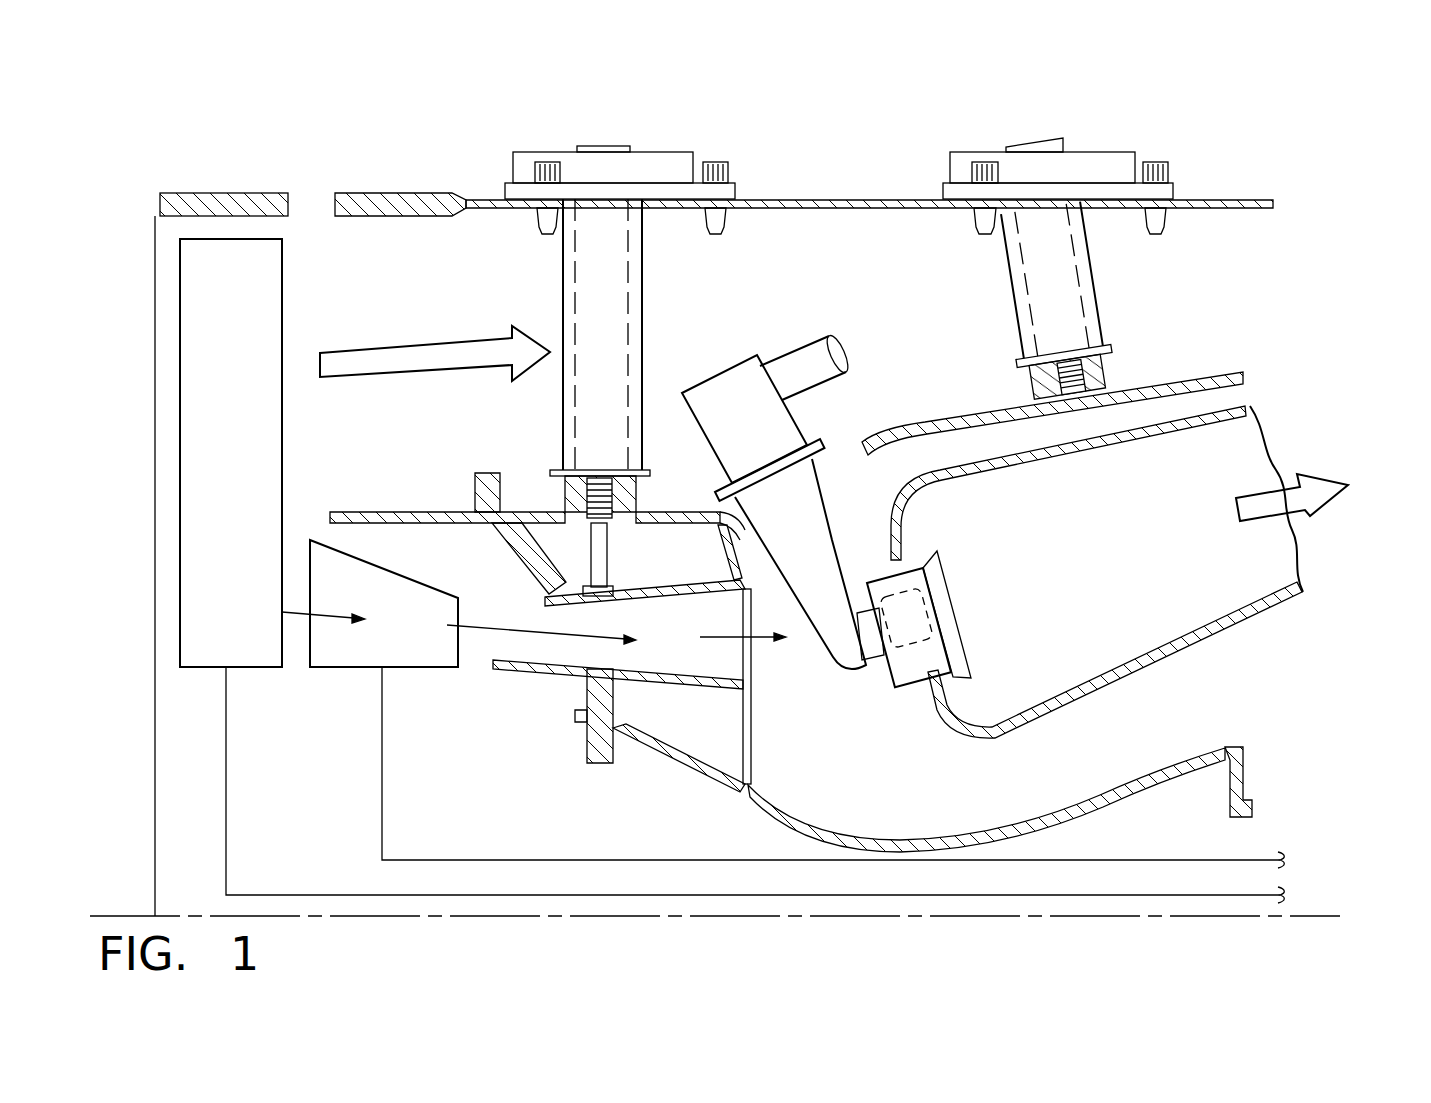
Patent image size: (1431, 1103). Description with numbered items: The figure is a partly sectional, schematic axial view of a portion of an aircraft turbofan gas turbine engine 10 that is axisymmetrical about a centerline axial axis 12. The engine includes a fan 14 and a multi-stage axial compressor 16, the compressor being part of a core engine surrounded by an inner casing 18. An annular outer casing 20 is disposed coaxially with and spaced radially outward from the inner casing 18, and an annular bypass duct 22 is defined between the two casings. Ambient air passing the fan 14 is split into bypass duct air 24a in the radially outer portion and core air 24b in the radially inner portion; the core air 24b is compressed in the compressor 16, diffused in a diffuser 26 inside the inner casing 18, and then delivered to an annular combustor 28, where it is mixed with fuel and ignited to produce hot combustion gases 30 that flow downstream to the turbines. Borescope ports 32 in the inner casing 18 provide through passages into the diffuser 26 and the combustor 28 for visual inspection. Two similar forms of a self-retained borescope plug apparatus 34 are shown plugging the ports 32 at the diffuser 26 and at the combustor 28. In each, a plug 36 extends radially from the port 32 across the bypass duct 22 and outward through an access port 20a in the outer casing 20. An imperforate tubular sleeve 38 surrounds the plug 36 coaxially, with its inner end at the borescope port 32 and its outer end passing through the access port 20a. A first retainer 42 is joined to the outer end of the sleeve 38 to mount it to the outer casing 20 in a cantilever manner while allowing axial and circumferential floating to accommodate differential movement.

The gas turbine engine 10 is at (1324, 141).
The centerline axial axis 12 is at (1316, 912).
The fan 14 is at (210, 433).
The multi-stage axial compressor 16 is at (374, 658).
The inner casing 18 is at (877, 422).
The outer casing 20 is at (818, 180).
The access port 20a is at (500, 216).
The bypass duct 22 is at (787, 322).
The bypass duct air 24a is at (423, 357).
The core air 24b is at (323, 615).
The diffuser 26 is at (644, 628).
The combustor 28 is at (1079, 580).
The combustion gases 30 is at (1297, 498).
The borescope port 32 is at (640, 510).
The borescope plug apparatus 34 is at (682, 282).
The plug 36 is at (617, 146).
The tubular sleeve 38 is at (553, 393).
The first retainer 42 is at (702, 156).